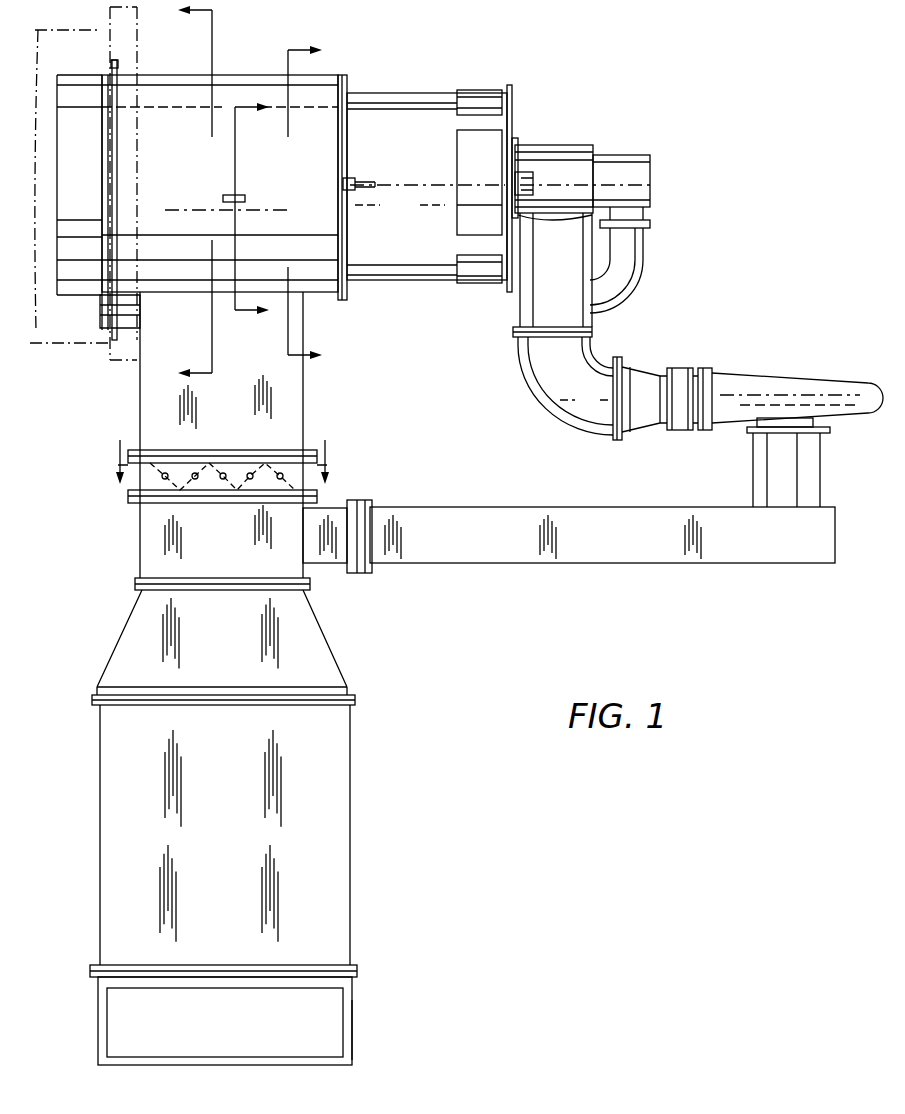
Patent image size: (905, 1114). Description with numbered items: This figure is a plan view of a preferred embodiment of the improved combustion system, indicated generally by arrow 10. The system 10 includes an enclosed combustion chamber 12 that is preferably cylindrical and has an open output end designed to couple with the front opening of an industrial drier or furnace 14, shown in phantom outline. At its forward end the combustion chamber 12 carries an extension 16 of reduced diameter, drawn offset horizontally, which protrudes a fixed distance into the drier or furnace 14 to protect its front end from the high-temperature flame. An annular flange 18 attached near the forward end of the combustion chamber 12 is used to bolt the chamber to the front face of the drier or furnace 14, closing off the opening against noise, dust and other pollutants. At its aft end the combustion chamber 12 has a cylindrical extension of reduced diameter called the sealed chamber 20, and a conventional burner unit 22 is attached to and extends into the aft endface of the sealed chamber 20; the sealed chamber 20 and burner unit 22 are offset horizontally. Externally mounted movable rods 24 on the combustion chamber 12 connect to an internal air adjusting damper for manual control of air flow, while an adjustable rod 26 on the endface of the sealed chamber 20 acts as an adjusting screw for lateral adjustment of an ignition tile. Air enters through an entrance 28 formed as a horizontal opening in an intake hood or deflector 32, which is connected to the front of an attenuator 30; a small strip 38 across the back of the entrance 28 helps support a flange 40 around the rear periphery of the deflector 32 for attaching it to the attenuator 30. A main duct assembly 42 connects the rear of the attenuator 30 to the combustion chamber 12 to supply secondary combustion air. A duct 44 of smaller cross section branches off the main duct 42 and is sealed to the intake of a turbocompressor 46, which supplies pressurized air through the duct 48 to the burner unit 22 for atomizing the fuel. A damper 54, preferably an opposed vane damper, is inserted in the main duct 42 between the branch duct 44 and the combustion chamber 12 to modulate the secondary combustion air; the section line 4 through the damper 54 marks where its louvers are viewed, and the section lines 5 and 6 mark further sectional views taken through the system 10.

The combustion system 10 is at (82, 548).
The combustion chamber 12 is at (228, 76).
The drier or furnace 14 is at (60, 350).
The extension 16 is at (75, 78).
The annular flange 18 is at (117, 66).
The sealed chamber 20 is at (430, 94).
The burner unit 22 is at (556, 146).
The movable rods 24 is at (370, 190).
The adjustable rod 26 is at (533, 184).
The entrance 28 is at (335, 1018).
The attenuator 30 is at (353, 862).
The intake hood or deflector 32 is at (353, 1043).
The small strip 38 is at (348, 981).
The flange 40 is at (90, 973).
The main duct assembly 42 is at (305, 396).
The duct 44 is at (440, 565).
The turbocompressor 46 is at (752, 378).
The duct 48 is at (598, 360).
The damper 54 is at (145, 492).
The section line 4— 4 is at (223, 470).
The section line 5- 5 is at (183, 195).
The section line 6- 6 is at (315, 203).